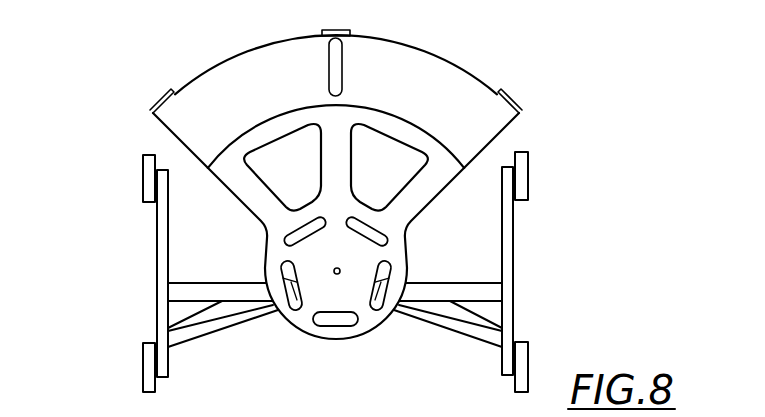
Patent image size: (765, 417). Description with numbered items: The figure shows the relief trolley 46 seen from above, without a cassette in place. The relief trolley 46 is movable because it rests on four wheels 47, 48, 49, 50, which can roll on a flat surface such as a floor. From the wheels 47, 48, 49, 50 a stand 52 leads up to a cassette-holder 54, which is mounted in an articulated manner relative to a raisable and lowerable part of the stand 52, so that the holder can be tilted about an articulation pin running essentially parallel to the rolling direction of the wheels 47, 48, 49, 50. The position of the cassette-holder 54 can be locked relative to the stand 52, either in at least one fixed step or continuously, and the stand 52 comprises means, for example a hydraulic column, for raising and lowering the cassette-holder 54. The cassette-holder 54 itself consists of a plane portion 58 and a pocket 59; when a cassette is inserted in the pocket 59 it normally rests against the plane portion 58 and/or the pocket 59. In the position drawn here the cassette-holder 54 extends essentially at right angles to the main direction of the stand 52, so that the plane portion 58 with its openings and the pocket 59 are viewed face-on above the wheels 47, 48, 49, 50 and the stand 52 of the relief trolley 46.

The relief trolley 46 is at (556, 207).
The wheel 47 is at (148, 178).
The wheel 48 is at (148, 368).
The wheel 49 is at (520, 343).
The wheel 50 is at (522, 170).
The stand 52 is at (409, 330).
The cassette-holder 54 is at (452, 50).
The plane portion 58 is at (330, 195).
The pocket 59 is at (204, 97).